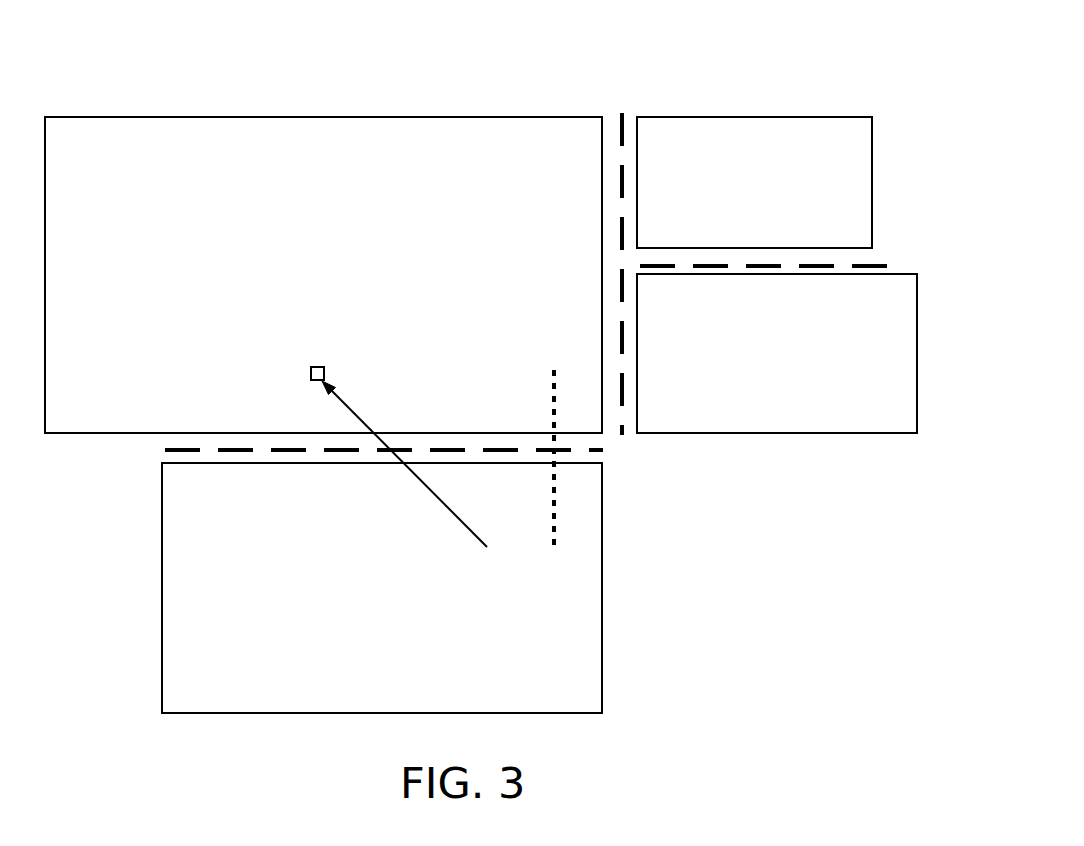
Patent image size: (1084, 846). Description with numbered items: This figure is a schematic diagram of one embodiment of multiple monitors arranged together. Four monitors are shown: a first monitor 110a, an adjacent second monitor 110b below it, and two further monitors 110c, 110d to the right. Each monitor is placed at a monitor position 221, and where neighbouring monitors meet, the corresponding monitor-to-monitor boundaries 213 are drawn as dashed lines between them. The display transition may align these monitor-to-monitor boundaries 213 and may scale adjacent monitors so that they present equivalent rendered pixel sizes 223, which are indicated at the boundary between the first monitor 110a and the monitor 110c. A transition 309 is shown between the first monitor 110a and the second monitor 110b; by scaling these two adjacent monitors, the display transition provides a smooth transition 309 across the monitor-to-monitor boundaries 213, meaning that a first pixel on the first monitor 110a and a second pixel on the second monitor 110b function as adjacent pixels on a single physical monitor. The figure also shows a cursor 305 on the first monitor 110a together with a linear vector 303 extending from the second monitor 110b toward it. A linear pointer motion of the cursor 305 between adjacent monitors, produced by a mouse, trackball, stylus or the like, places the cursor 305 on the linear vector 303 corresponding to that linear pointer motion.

The first monitor 110a is at (348, 286).
The second monitor 110b is at (408, 600).
The monitor 110c is at (780, 194).
The monitor 110d is at (802, 364).
The monitor-to-monitor boundary 213 is at (165, 451).
The monitor position 221 is at (45, 116).
The rendered pixel size 223 is at (657, 160).
The linear vector 303 is at (363, 420).
The cursor 305 is at (309, 370).
The transition 309 is at (555, 500).